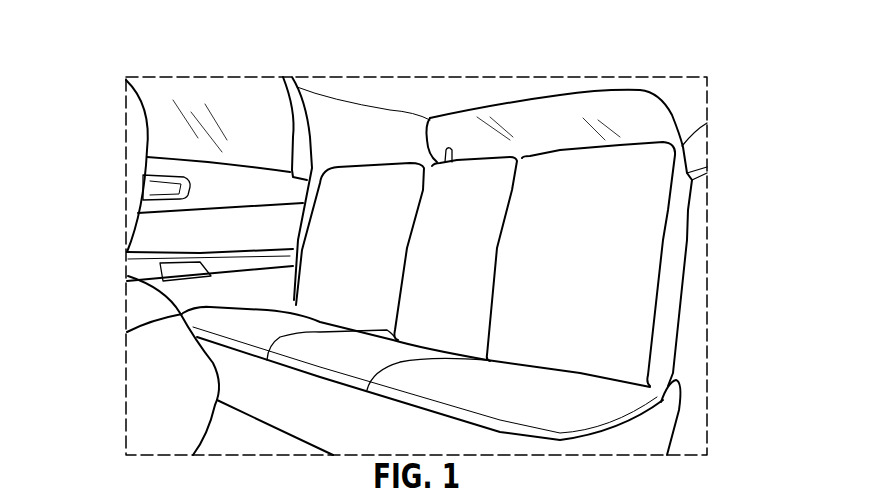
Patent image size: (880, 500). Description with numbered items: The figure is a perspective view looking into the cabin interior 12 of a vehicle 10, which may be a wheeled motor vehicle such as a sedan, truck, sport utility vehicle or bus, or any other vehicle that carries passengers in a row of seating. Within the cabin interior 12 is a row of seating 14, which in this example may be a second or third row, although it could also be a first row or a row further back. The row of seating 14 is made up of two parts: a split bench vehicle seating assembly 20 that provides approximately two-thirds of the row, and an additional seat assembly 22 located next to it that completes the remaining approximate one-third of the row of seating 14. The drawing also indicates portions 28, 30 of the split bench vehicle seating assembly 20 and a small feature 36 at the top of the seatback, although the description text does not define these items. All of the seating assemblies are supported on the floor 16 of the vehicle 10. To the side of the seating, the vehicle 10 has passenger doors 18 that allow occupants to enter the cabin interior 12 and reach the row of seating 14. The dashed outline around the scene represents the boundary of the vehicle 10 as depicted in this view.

The vehicle 10 is at (736, 101).
The cabin interior 12 is at (124, 80).
The row of seating 14 is at (718, 309).
The floor 16 is at (220, 437).
The passenger doors 18 is at (237, 183).
The split bench vehicle seating assembly 20 is at (477, 193).
The additional seat assembly 22 is at (356, 137).
The third seatback portion 28 is at (558, 170).
The second seatback portion 30 is at (493, 170).
The anchor 36 is at (444, 150).